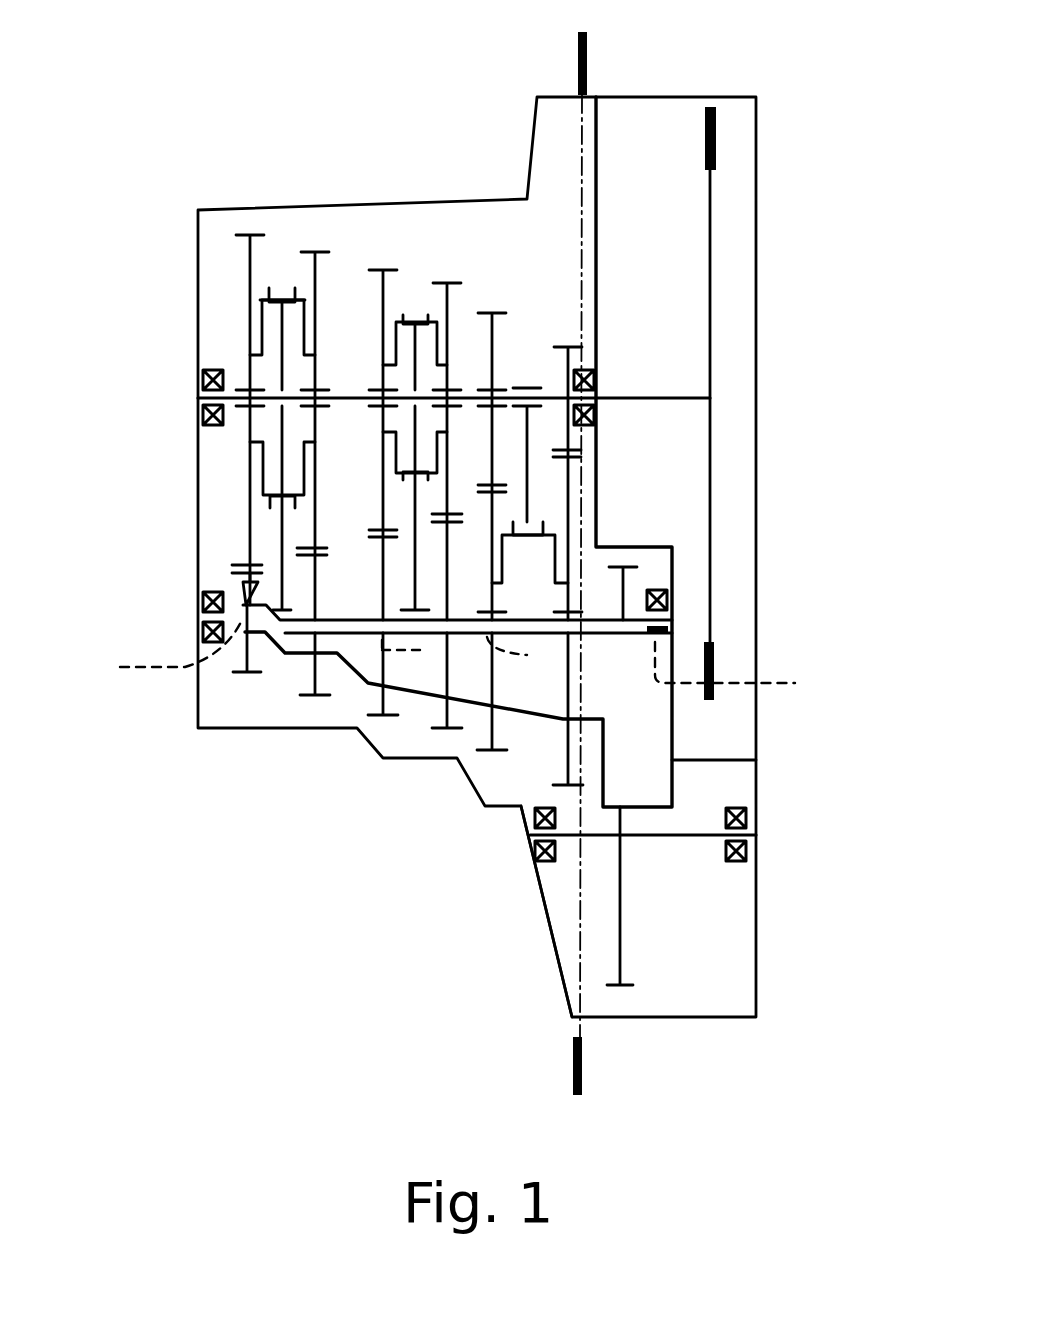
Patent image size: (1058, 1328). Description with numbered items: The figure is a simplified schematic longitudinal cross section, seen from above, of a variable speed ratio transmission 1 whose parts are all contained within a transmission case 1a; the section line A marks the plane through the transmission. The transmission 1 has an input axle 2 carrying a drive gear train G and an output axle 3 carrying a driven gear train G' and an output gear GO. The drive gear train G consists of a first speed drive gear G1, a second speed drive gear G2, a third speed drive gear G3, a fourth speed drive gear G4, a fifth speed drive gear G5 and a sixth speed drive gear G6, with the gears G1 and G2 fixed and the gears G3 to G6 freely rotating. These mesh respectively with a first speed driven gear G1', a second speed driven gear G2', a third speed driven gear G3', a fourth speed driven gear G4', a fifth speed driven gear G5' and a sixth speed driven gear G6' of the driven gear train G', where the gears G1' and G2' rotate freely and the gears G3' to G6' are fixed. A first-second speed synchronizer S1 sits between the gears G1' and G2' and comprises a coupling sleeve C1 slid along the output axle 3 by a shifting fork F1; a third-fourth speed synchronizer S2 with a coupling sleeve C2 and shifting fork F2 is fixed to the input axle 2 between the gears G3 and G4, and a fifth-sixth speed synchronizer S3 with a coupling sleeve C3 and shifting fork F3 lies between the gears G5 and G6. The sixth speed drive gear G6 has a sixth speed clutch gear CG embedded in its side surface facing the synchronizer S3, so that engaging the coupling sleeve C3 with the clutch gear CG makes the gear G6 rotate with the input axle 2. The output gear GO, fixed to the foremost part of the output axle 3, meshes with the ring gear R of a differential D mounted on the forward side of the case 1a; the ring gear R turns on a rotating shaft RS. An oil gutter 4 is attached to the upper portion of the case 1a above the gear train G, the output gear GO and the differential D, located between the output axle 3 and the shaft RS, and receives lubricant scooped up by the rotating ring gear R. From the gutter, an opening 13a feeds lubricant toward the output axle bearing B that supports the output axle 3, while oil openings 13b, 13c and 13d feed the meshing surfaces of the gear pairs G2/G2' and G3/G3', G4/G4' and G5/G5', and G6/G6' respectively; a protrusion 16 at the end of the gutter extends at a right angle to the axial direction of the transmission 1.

The variable speed ratio transmission 1 is at (776, 164).
The transmission case 1a is at (553, 950).
The input axle 2 is at (670, 398).
The output axle 3 is at (284, 575).
The oil gutter 4 is at (422, 667).
The protrusion 16 is at (237, 577).
The opening 13a is at (752, 671).
The oil opening 13b is at (529, 653).
The oil opening 13c is at (426, 655).
The oil opening 13d is at (143, 652).
The section line A- A is at (562, 1062).
The output axle bearing B is at (658, 590).
The differential D is at (711, 904).
The ring gear R is at (624, 927).
The rotating shaft of the ring gear RS is at (593, 838).
The drive gear train G is at (362, 166).
The driven gear train G' is at (340, 733).
The 1st speed drive gear G1 is at (615, 439).
The 2nd speed drive gear G2 is at (529, 424).
The 3rd speed drive gear G3 is at (461, 416).
The 4th speed drive gear G4 is at (371, 384).
The 5th speed drive gear G5 is at (319, 371).
The 6th speed drive gear G6 is at (192, 406).
The 1st speed driven gear G1' is at (540, 714).
The 2nd speed driven gear G2' is at (475, 757).
The 3rd speed driven gear G3' is at (425, 754).
The 4th speed driven gear G4' is at (351, 727).
The 5th speed driven gear G5' is at (285, 718).
The 6th speed driven gear G6' is at (174, 664).
The output gear GO is at (626, 583).
The 6th speed clutch gear CG is at (258, 318).
The coupling sleeve C1 is at (517, 526).
The coupling sleeve C2 is at (398, 482).
The coupling sleeve C3 is at (283, 509).
The 1st-2nd speed synchronizer S1 is at (556, 522).
The 3rd-4th speed synchronizer S2 is at (410, 298).
The 5th-6th speed synchronizer S3 is at (281, 268).
The shifting fork F1 is at (532, 450).
The shifting fork F2 is at (383, 558).
The shifting fork F3 is at (300, 610).